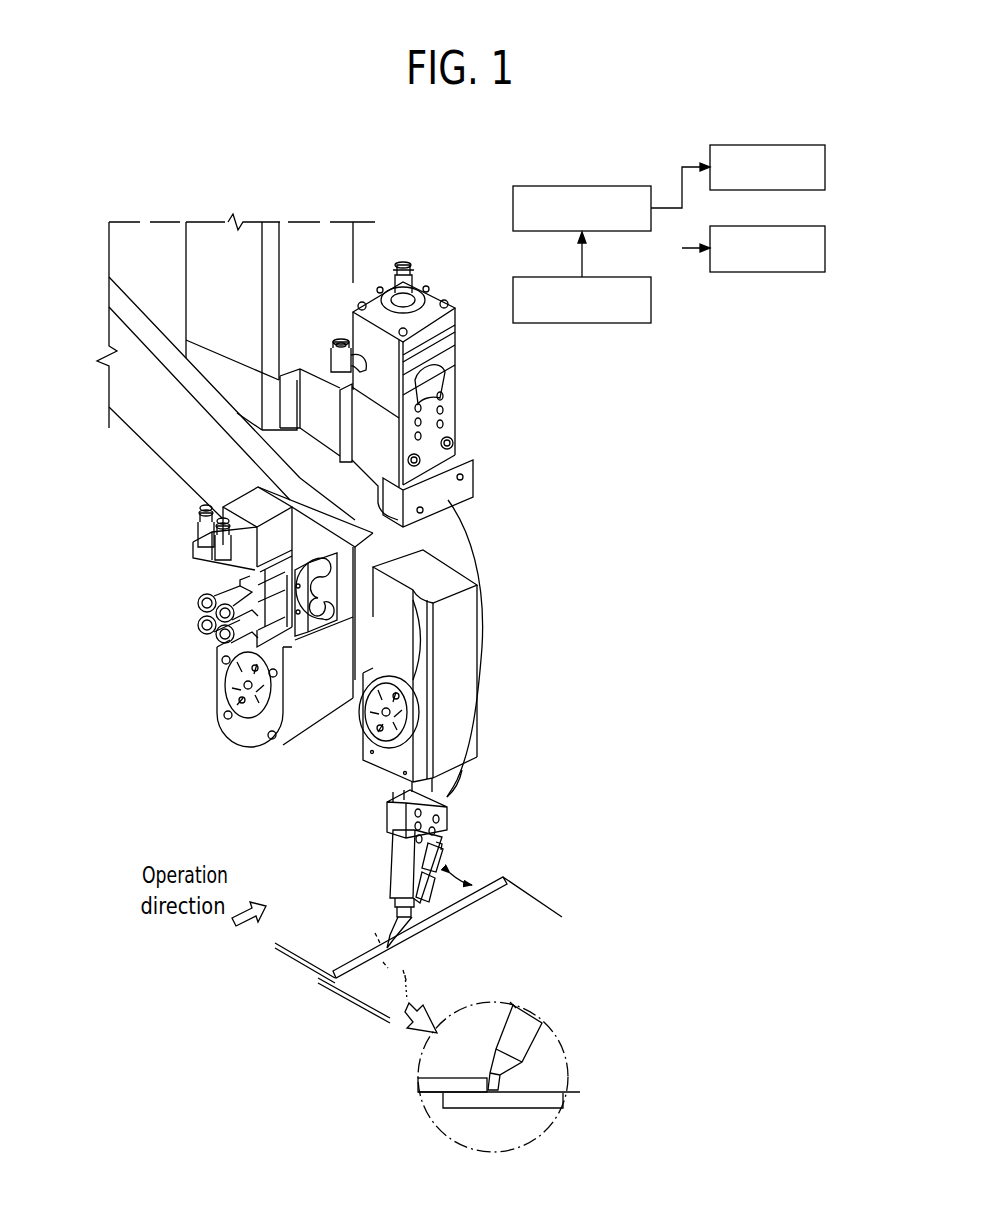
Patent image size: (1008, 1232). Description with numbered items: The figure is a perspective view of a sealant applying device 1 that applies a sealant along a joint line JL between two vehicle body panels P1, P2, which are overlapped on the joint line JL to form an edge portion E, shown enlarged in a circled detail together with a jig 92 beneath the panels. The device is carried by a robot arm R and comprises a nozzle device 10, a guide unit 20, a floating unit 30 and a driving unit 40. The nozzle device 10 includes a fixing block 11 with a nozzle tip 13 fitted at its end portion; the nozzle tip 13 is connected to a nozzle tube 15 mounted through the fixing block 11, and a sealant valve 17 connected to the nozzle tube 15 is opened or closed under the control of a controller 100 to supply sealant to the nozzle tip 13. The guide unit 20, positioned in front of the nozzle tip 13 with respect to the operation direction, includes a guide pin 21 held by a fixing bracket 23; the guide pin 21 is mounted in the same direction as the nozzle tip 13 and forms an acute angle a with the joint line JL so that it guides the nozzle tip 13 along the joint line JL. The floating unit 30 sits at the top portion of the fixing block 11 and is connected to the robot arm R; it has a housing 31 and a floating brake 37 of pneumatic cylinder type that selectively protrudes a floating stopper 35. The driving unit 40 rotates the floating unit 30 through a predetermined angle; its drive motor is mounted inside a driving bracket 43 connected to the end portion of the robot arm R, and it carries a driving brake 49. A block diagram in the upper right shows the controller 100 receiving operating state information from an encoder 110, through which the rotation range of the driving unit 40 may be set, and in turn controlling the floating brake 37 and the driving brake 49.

The sealant applying device 1 is at (301, 177).
The robot arm R is at (163, 437).
The sealant valve 17 is at (452, 432).
The controller 100 is at (572, 184).
The encoder 110 is at (619, 324).
The floating brake 37 is at (750, 144).
The driving brake 49 is at (752, 273).
The driving unit 40 is at (203, 657).
The driving bracket 43 is at (286, 728).
The floating unit 30 is at (482, 690).
The housing 31 is at (458, 668).
The floating stopper 35 is at (418, 716).
The nozzle tube 15 is at (460, 772).
The nozzle device 10 is at (382, 813).
The fixing block 11 is at (400, 850).
The nozzle tip 13 is at (396, 922).
The fixing bracket 23 is at (437, 897).
The acute angle a is at (463, 869).
The guide unit 20 is at (463, 903).
The guide pin 21 is at (413, 927).
The joint line JL is at (352, 957).
The panel P1 is at (300, 962).
The jig 92 is at (352, 1000).
The panel P2 is at (548, 1100).
The edge portion E is at (490, 1092).